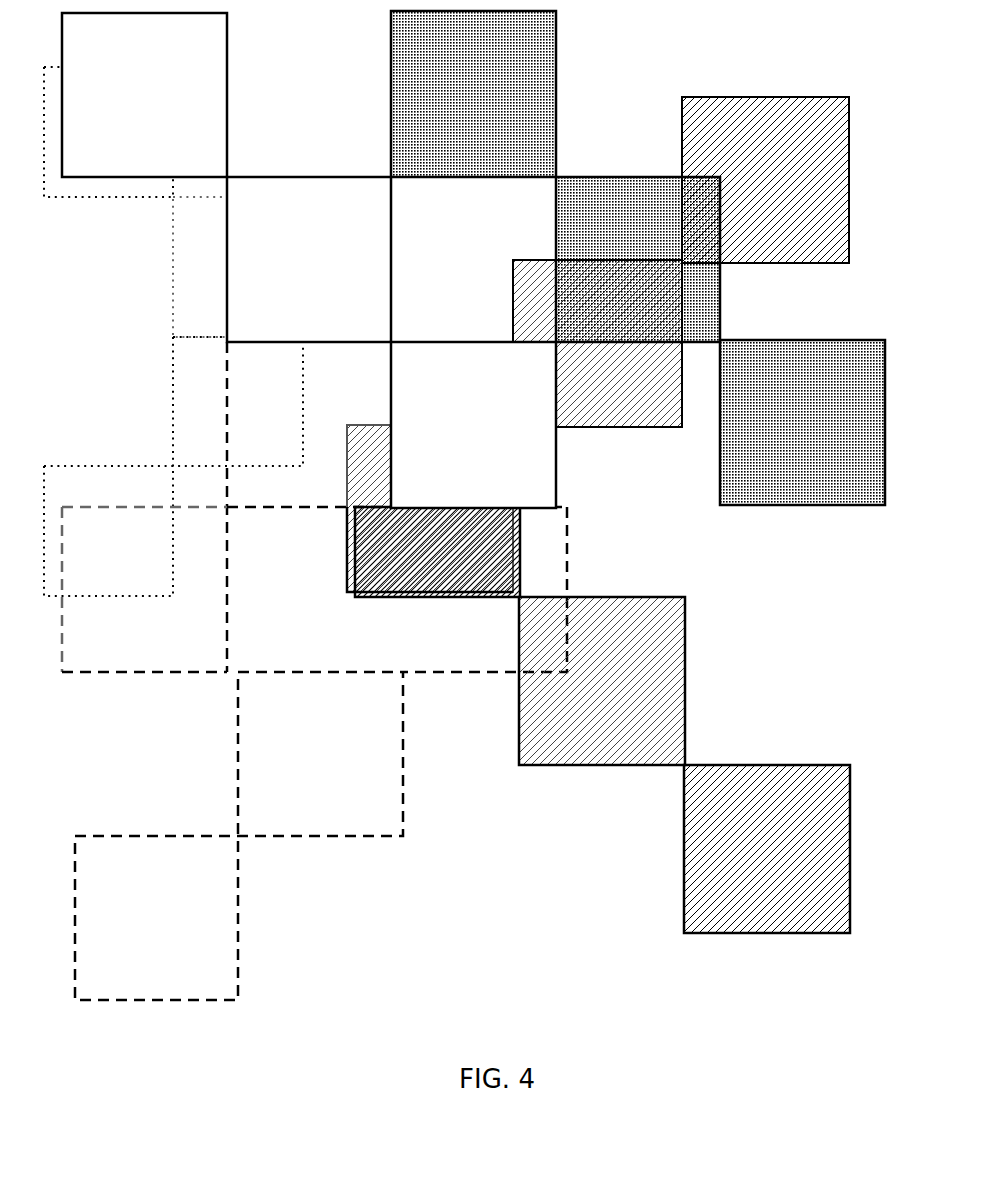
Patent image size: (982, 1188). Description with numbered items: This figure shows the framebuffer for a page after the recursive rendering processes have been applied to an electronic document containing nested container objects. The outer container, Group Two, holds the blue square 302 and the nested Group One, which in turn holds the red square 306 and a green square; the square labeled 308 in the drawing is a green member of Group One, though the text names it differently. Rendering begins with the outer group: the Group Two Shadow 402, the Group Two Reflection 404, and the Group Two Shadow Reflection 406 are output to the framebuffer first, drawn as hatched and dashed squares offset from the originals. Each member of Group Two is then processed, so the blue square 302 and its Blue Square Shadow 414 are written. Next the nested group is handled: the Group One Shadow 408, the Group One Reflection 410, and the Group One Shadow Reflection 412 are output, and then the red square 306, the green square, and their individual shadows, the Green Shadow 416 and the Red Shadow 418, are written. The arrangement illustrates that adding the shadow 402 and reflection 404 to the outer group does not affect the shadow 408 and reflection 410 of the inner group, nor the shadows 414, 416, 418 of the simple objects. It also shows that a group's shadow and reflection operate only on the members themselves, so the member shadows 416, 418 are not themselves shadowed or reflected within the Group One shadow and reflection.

The blue square 302 is at (460, 415).
The red square 306 is at (296, 281).
The green square 308 is at (131, 115).
The Group 2 Shadow 402 is at (608, 767).
The Group 2 Reflection 404 is at (350, 840).
The Group 2 Shadow Reflection 406 is at (740, 95).
The Group 1 Shadow 408 is at (148, 198).
The Group 1 Reflection 410 is at (143, 675).
The Group 1 Shadow Reflection 412 is at (148, 465).
The Blue Square Shadow 414 is at (800, 508).
The Green Shadow 416 is at (722, 299).
The Red Shadow 418 is at (390, 90).